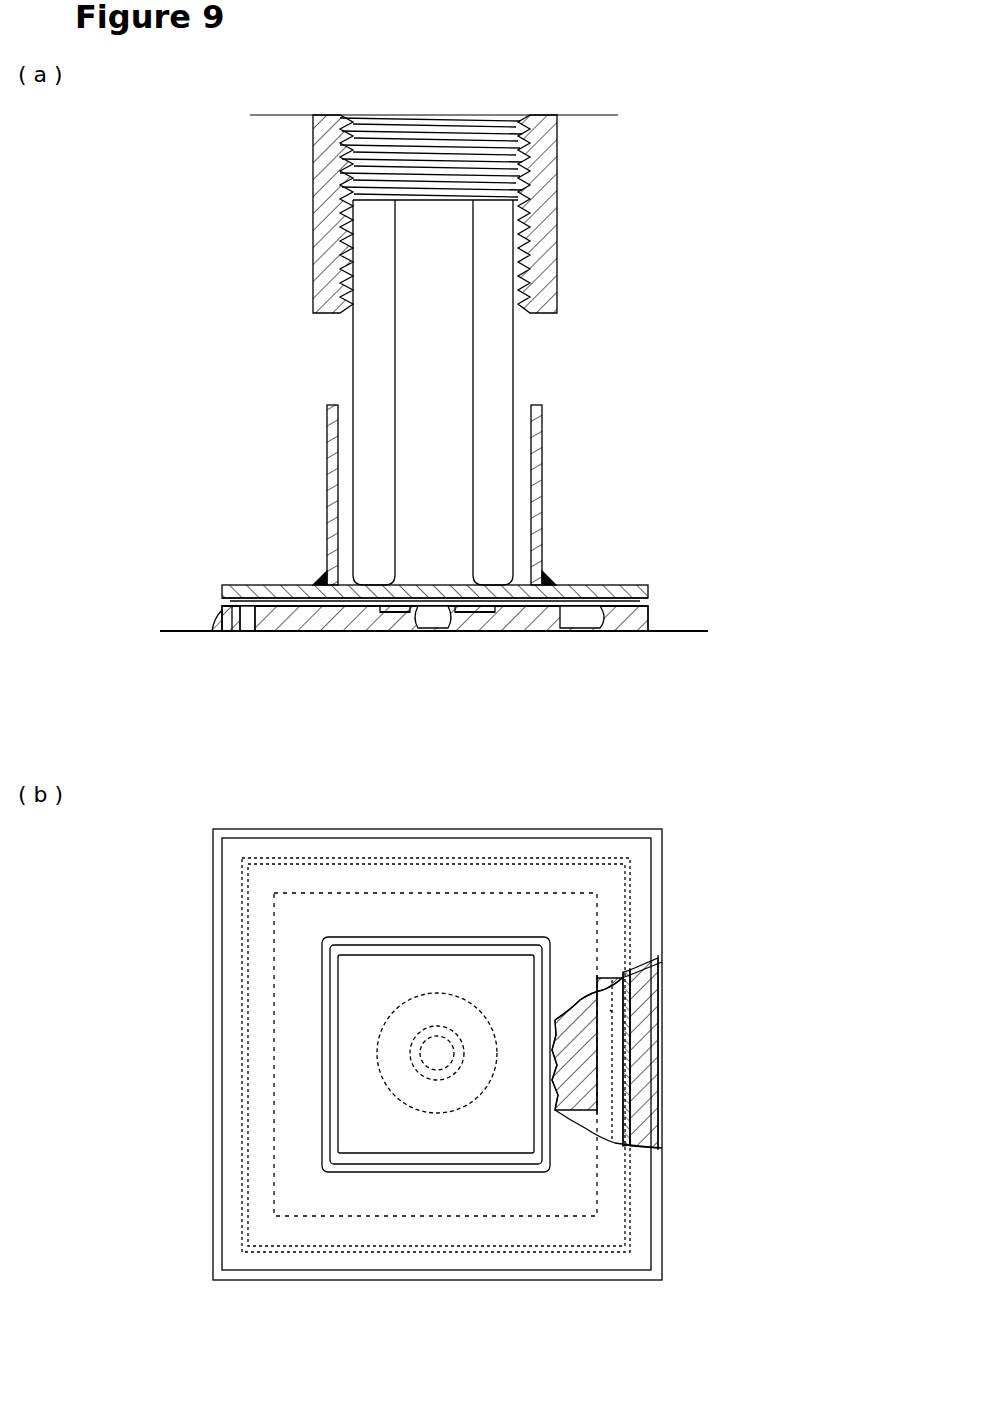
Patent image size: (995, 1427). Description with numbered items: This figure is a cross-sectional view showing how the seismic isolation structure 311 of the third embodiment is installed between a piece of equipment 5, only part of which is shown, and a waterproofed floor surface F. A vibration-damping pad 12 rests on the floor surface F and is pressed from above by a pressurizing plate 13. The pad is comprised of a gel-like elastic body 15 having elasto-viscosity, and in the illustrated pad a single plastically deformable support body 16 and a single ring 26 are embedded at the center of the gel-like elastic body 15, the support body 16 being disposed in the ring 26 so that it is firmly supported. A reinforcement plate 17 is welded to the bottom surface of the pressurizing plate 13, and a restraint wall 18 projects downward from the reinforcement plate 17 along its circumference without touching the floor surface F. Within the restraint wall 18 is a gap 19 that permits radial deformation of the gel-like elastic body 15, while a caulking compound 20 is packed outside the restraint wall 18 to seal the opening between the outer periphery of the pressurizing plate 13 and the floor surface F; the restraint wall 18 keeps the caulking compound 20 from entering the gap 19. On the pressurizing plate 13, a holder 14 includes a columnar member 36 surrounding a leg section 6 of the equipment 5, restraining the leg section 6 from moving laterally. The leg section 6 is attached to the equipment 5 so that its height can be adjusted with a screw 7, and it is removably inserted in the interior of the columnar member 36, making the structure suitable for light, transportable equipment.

The equipment 5 is at (313, 180).
The leg section 6 is at (513, 352).
The screw 7 is at (445, 150).
The seismic isolation structure 311 is at (270, 402).
The columnar member 36 is at (328, 454).
The holder 14 is at (553, 460).
The pressurizing plate 13 is at (596, 585).
The reinforcement plate 17 is at (594, 632).
The vibration-damping pad 12 is at (352, 632).
The gap 19 is at (276, 633).
The restraint wall 18 is at (241, 633).
The caulking compound 20 is at (219, 625).
The support body 16 is at (440, 631).
The ring 26 is at (483, 631).
The gel-like elastic body 15 is at (556, 1010).
The floor surface F is at (695, 629).